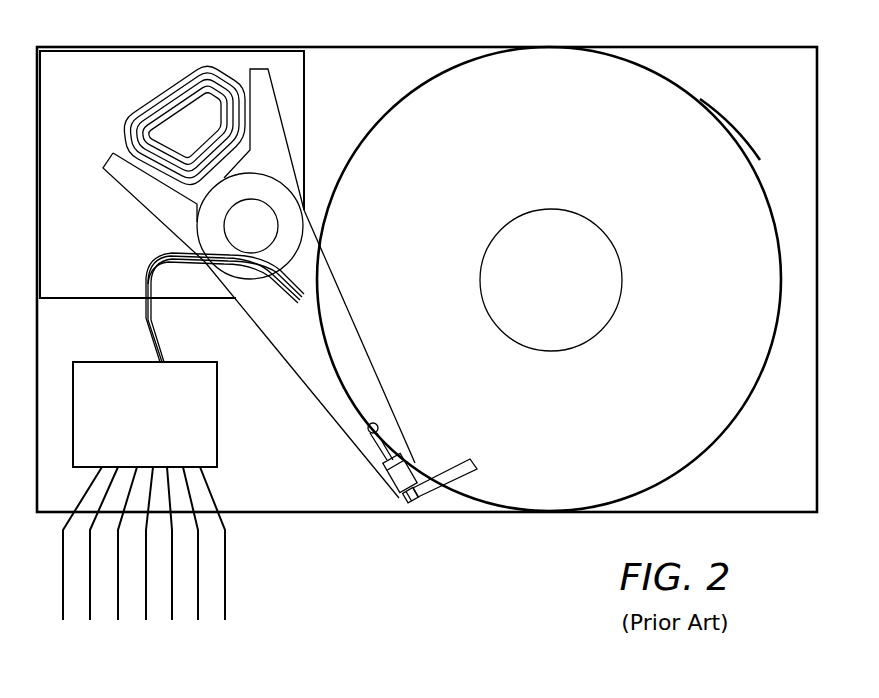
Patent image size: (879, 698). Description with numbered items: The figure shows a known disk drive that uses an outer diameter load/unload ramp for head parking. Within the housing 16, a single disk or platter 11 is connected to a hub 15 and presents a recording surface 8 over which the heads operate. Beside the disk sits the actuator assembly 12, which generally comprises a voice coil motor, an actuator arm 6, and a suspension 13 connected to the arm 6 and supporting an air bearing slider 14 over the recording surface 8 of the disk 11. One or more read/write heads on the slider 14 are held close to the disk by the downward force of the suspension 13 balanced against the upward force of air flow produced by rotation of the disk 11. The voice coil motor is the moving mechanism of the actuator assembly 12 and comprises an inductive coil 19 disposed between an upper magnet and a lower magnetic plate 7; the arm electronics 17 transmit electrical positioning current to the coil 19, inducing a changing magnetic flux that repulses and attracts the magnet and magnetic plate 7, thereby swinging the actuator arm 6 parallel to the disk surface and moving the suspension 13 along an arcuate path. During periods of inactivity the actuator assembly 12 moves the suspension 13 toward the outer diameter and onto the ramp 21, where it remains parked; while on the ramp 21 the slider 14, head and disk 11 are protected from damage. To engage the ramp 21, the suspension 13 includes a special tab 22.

The actuator arm 6 is at (273, 128).
The lower magnetic plate 7 is at (79, 253).
The recording surface 8 is at (628, 405).
The disk 11 is at (727, 128).
The actuator assembly 12 is at (300, 146).
The suspension 13 is at (353, 343).
The air bearing slider 14 is at (409, 466).
The hub 15 is at (595, 258).
The housing 16 is at (640, 46).
The arm electronics 17 is at (218, 420).
The inductive coil 19 is at (149, 98).
The outer diameter load/unload ramp 21 is at (471, 478).
The tab 22 is at (418, 505).